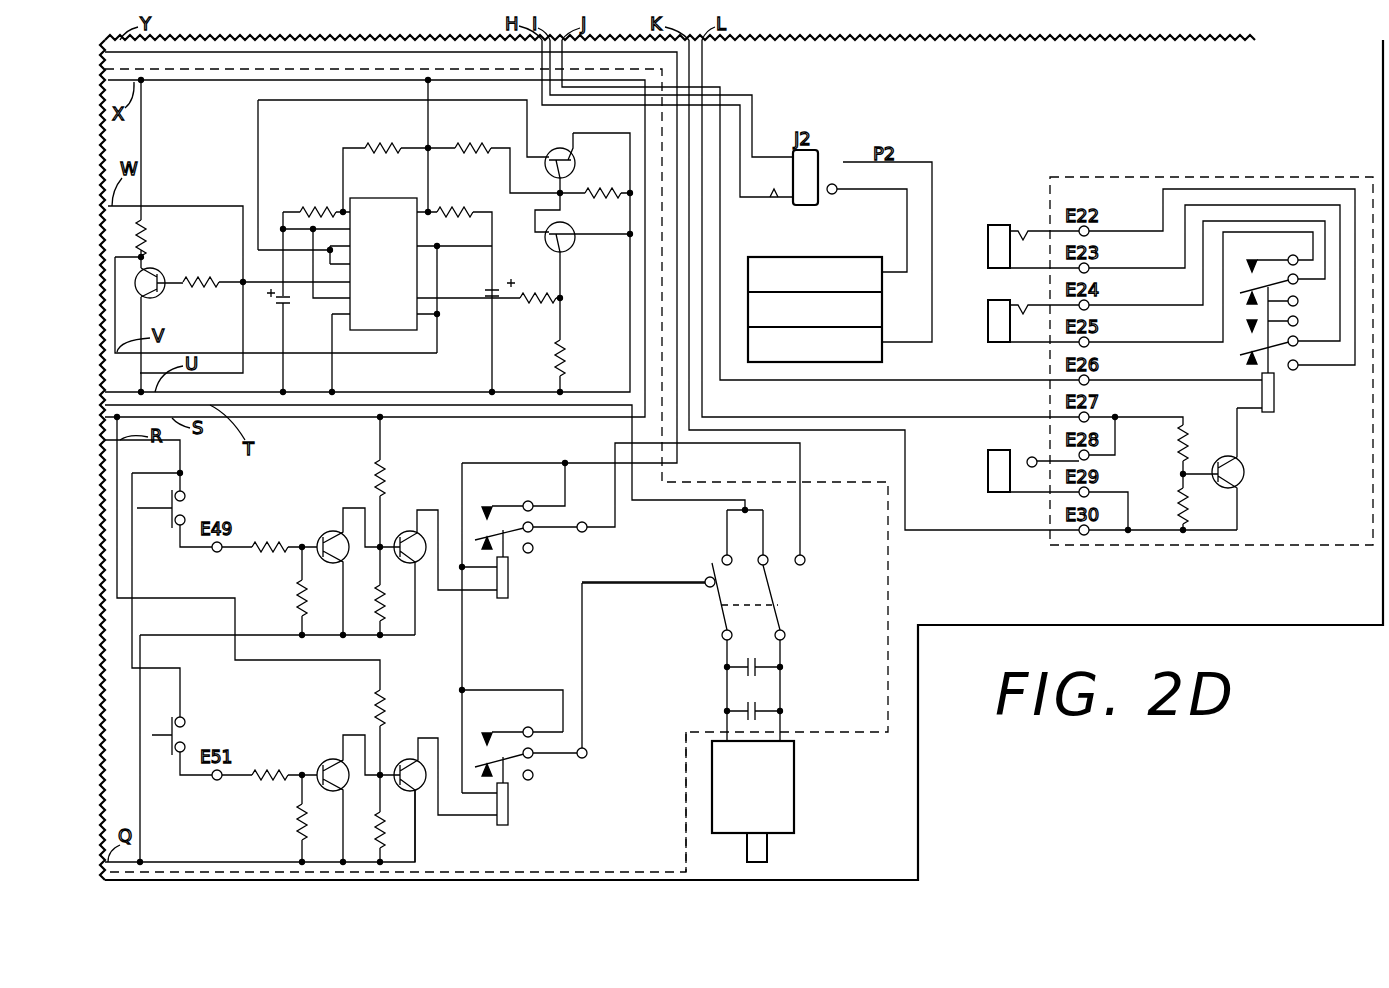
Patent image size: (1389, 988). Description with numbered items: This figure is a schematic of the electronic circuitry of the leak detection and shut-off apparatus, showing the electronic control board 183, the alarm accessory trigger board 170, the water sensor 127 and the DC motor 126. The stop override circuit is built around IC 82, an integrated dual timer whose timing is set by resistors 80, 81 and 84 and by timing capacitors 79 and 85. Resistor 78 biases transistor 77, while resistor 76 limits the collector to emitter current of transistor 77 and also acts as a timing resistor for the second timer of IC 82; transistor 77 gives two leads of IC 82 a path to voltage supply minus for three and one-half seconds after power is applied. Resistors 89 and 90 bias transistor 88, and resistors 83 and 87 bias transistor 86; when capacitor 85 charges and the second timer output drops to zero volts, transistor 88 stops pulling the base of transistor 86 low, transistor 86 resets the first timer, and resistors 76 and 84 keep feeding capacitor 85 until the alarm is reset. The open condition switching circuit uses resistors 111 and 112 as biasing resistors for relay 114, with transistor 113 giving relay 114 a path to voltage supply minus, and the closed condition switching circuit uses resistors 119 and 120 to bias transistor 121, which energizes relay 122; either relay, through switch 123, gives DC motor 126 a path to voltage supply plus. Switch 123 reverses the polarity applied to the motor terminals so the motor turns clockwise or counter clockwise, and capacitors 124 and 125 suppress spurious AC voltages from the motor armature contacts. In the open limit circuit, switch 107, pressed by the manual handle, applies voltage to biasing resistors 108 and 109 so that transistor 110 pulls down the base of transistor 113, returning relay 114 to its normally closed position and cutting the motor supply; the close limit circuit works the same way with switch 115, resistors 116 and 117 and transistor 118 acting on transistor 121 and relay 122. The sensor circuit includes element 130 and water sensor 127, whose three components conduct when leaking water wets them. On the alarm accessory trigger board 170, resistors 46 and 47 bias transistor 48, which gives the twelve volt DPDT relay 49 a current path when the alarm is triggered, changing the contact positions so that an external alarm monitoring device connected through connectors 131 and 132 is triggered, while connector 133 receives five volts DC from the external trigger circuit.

The resistor 46 is at (1176, 440).
The resistor 47 is at (1190, 525).
The transistor 48 is at (1246, 478).
The relay 49 is at (1275, 408).
The resistor 76 is at (146, 236).
The transistor 77 is at (163, 276).
The resistor 78 is at (205, 288).
The capacitor 79 is at (290, 304).
The resistor 80 is at (313, 212).
The resistor 81 is at (366, 150).
The IC 82 is at (366, 200).
The resistor 83 is at (472, 156).
The resistor 84 is at (465, 216).
The capacitor 85 is at (490, 288).
The transistor 86 is at (556, 150).
The resistor 87 is at (602, 186).
The transistor 88 is at (567, 246).
The resistor 89 is at (530, 292).
The resistor 90 is at (566, 366).
The switch 107 is at (186, 490).
The resistor 108 is at (262, 540).
The resistor 109 is at (298, 604).
The transistor 110 is at (328, 532).
The resistor 111 is at (376, 482).
The resistor 112 is at (387, 612).
The transistor 113 is at (398, 530).
The relay 114 is at (508, 578).
The switch 115 is at (186, 718).
The resistor 116 is at (262, 768).
The resistor 117 is at (298, 836).
The transistor 118 is at (326, 762).
The resistor 119 is at (376, 712).
The resistor 120 is at (388, 832).
The transistor 121 is at (396, 758).
The relay 122 is at (508, 805).
The switch 123 is at (720, 636).
The capacitor 124 is at (782, 670).
The capacitor 125 is at (782, 714).
The DC motor 126 is at (794, 815).
The water sensor 127 is at (876, 262).
The sensor circuit element 130 is at (795, 208).
The connector 131 is at (990, 268).
The connector 132 is at (990, 342).
The connector 133 is at (992, 462).
The alarm accessory trigger board 170 is at (1225, 428).
The electronic control board 183 is at (628, 872).